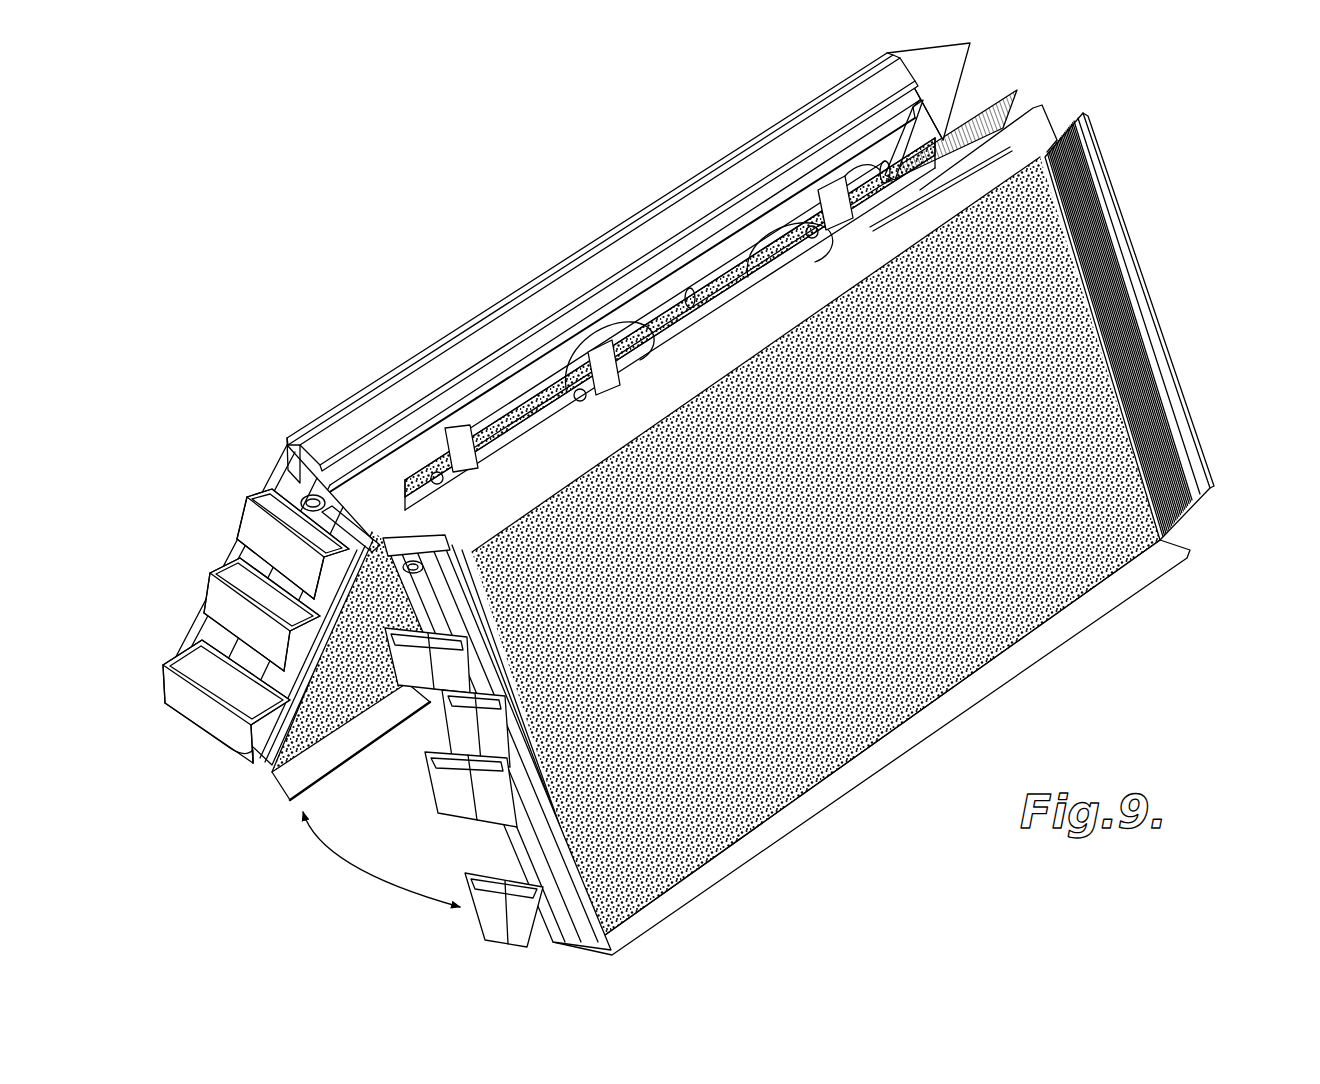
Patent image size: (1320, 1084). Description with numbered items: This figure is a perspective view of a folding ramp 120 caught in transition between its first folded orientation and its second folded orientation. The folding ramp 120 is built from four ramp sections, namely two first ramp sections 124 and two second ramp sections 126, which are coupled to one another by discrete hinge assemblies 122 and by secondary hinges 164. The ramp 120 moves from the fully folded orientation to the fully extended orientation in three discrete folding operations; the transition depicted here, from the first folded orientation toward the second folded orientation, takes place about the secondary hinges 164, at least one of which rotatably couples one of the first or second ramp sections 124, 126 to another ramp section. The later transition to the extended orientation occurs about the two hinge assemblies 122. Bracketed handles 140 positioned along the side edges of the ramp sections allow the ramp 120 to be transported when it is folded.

The folding ramp 120 is at (1162, 280).
The hinge assembly 122 is at (222, 558).
The first ramp section 124 is at (593, 265).
The second ramp section 126 is at (533, 390).
The bracketed handle 140 is at (682, 292).
The secondary hinge 164 is at (843, 197).